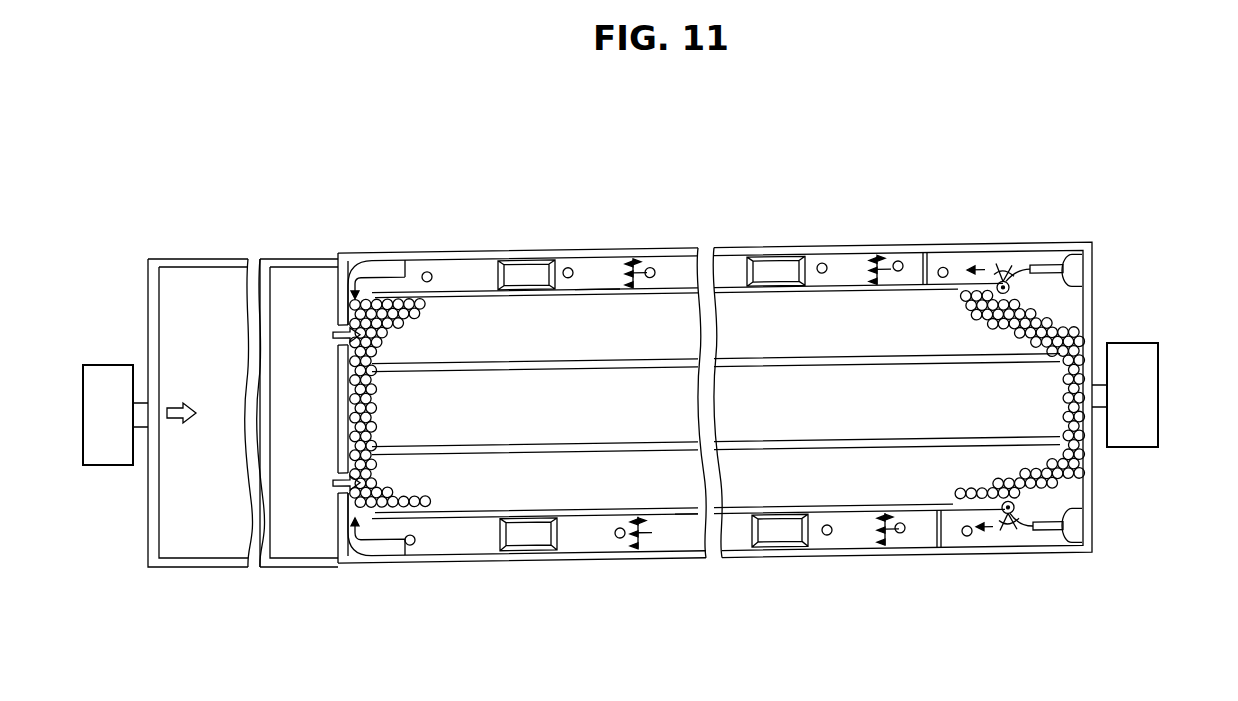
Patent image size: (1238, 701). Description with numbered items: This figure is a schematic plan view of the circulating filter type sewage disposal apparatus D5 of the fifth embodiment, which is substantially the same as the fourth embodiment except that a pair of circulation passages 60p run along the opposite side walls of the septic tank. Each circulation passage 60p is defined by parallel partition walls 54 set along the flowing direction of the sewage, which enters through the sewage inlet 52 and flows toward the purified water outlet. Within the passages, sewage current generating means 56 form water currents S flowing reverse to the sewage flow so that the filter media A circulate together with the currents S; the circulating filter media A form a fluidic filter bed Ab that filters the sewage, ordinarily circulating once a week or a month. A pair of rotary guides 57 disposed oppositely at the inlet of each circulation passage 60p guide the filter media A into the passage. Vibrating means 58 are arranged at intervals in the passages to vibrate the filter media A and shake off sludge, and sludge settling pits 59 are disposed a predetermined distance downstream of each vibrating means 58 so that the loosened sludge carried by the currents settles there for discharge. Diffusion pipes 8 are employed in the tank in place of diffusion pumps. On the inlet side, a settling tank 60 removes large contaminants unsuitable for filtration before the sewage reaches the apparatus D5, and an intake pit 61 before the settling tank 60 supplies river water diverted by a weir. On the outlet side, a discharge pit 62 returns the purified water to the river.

The diffusion pipe 8 is at (735, 360).
The sewage inlet 52 is at (345, 335).
The partition wall 54 is at (926, 262).
The sewage current generating means 56 is at (1075, 262).
The rotary guide 57 is at (1012, 282).
The vibrating means 58 is at (640, 265).
The sludge settling pit 59 is at (533, 268).
The settling tank 60 is at (221, 542).
The circulation passage 60p is at (592, 268).
The intake pit 61 is at (113, 458).
The discharge pit 62 is at (1148, 412).
The filter media A is at (427, 272).
The fluidic filter bed Ab is at (1078, 352).
The water current S is at (386, 278).
The circulating filter type sewage disposal apparatus D5 is at (492, 202).